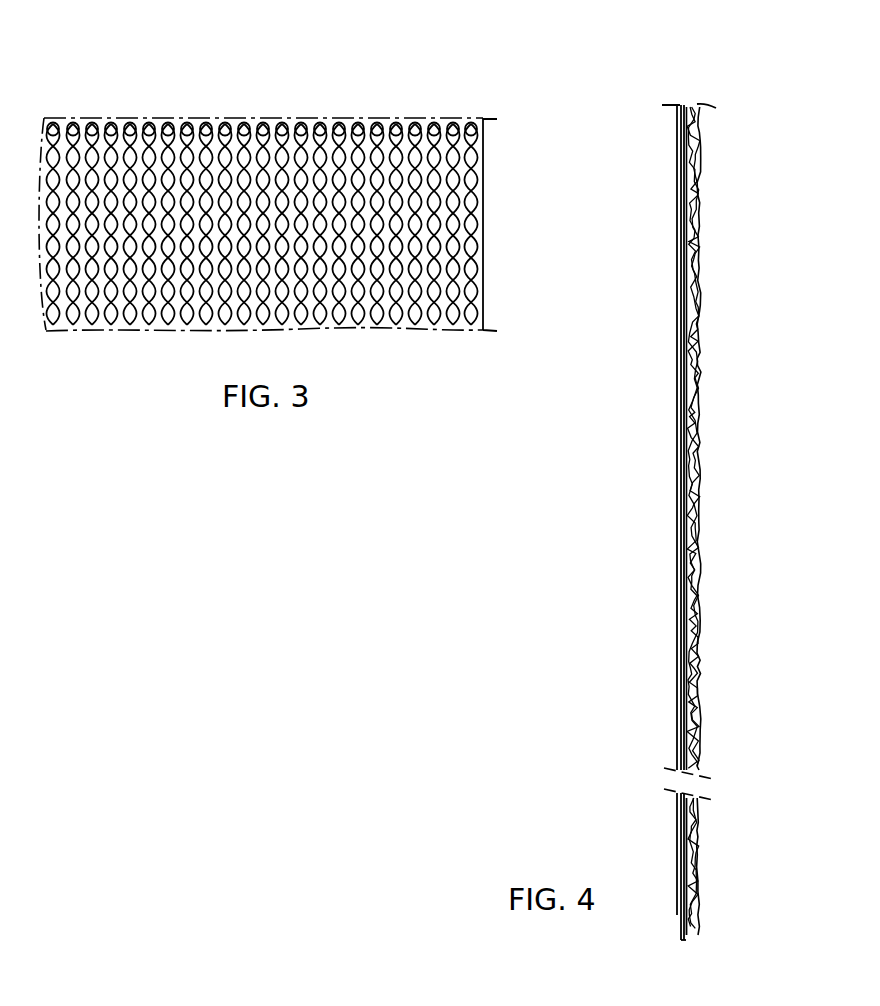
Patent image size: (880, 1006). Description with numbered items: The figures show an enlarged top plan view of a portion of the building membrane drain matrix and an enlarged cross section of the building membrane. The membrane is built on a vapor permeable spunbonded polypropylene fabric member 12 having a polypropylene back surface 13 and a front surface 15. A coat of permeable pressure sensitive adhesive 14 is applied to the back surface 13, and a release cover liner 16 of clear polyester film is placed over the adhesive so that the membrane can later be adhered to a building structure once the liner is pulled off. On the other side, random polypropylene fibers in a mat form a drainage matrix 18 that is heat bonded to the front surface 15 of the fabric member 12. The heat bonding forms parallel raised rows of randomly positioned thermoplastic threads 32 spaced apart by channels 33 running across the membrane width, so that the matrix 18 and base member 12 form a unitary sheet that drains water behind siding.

In FIG. 4, the spunbonded polypropylene fabric member 12 is at (685, 895).
In FIG. 4, the back surface 13 is at (680, 305).
In FIG. 4, the permeable pressure sensitive adhesive 14 is at (688, 450).
In FIG. 4, the front surface 15 is at (686, 940).
In FIG. 4, the release cover liner 16 is at (678, 645).
In FIG. 3, the drainage matrix 18 is at (470, 187).
In FIG. 4, the drainage matrix 18 is at (700, 253).
In FIG. 3, the thread rows 32 is at (92, 320).
In FIG. 3, the channels 33 is at (86, 125).